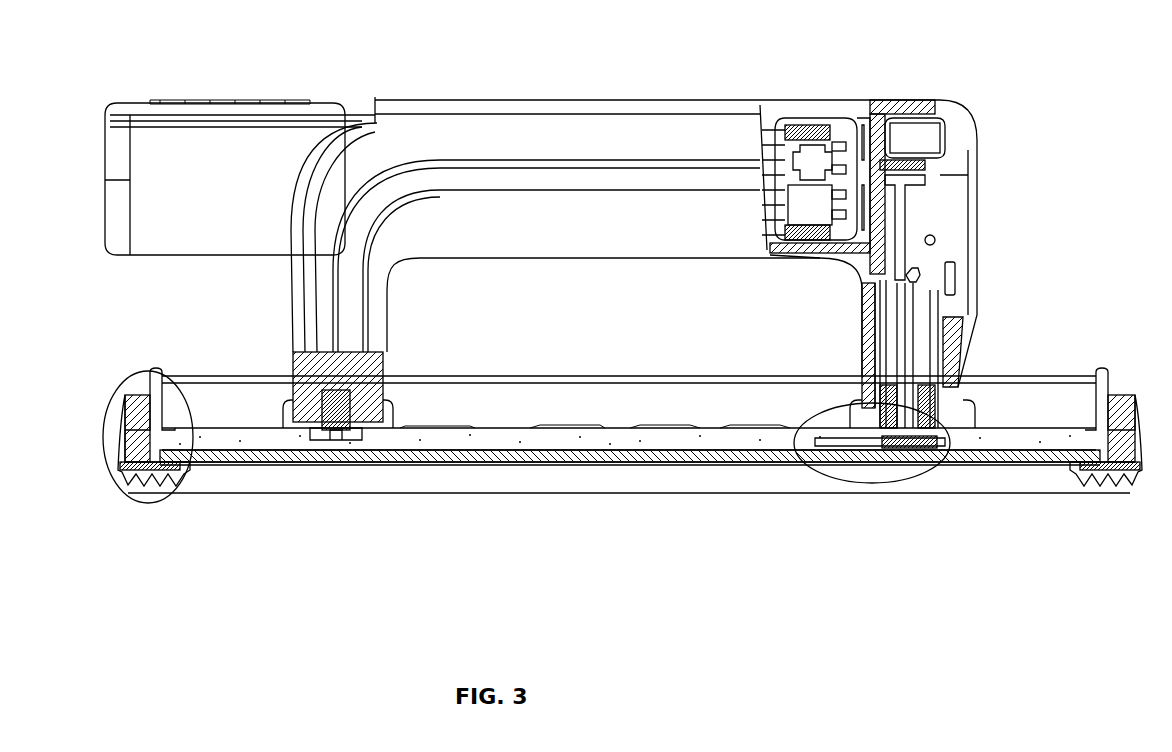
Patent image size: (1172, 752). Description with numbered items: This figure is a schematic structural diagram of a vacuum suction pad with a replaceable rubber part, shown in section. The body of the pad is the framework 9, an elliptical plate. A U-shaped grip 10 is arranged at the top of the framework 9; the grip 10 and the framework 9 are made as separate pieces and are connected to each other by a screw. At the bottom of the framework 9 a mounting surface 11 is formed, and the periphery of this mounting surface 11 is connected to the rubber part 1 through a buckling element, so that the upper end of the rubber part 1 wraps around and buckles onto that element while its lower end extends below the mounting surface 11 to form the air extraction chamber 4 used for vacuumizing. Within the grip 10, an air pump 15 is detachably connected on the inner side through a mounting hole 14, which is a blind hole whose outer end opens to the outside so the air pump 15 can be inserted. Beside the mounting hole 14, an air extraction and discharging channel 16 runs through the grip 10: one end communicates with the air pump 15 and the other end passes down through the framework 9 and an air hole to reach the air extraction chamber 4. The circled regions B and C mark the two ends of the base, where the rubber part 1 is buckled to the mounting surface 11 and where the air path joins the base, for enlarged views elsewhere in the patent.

The rubber part 1 is at (1035, 465).
The air extraction chamber 4 is at (607, 480).
The framework 9 is at (497, 440).
The grip 10 is at (598, 140).
The mounting surface 11 is at (763, 445).
The mounting hole 14 is at (856, 115).
The air pump 15 is at (812, 205).
The air extraction and discharging channel 16 is at (908, 352).
The detail region B is at (180, 482).
The detail region C is at (920, 480).